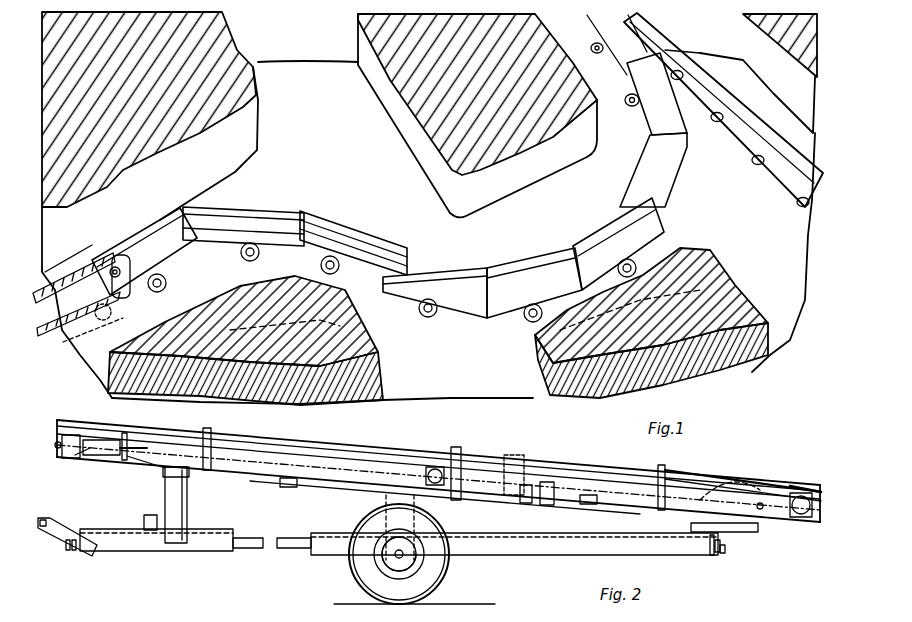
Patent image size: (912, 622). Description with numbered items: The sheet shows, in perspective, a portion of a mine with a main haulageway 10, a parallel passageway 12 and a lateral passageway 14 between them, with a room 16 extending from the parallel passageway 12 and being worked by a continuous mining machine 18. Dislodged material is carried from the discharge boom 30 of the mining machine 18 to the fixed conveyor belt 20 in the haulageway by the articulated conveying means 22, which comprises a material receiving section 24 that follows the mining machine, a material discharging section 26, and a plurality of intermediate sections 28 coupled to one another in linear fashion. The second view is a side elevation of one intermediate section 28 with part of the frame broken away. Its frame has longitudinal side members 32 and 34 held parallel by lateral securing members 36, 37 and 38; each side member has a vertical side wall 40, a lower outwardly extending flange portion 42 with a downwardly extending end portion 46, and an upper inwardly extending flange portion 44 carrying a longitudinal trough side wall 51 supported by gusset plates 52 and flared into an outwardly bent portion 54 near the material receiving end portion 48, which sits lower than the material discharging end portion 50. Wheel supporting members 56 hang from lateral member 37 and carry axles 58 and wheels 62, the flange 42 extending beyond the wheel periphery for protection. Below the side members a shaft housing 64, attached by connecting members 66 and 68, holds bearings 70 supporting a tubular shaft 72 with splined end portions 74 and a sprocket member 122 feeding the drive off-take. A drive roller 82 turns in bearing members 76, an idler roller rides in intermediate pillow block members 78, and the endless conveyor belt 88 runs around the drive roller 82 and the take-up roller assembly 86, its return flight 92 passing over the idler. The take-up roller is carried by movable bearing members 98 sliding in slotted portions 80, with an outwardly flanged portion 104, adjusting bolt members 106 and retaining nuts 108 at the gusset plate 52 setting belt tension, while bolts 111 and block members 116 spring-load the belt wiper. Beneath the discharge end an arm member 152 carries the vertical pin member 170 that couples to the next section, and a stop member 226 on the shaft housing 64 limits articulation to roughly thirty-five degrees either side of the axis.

In FIG. 1, the main haulageway 10 is at (718, 53).
In FIG. 1, the parallel passageway 12 is at (305, 62).
In FIG. 1, the lateral passageway 14 is at (553, 216).
In FIG. 1, the room 16 is at (180, 184).
In FIG. 1, the continuous mining machine 18 is at (80, 260).
In FIG. 1, the fixed conveyor belt 20 is at (790, 172).
In FIG. 1, the articulated conveying means 22 is at (446, 187).
In FIG. 1, the material receiving section 24 is at (170, 258).
In FIG. 1, the material discharging section 26 is at (616, 52).
In FIG. 1, the intermediate sections 28 is at (268, 215).
In FIG. 2, the intermediate sections 28 is at (392, 440).
In FIG. 1, the discharge boom 30 is at (124, 298).
In FIG. 2, the longitudinal side member 32 is at (550, 449).
In FIG. 2, the longitudinal side member 34 is at (275, 428).
In FIG. 2, the lateral securing member 36 is at (808, 480).
In FIG. 2, the lateral securing member 37 is at (400, 480).
In FIG. 2, the lateral securing member 38 is at (189, 495).
In FIG. 2, the vertical side wall 40 is at (290, 470).
In FIG. 2, the lower outwardly extending flange portion 42 is at (510, 495).
In FIG. 2, the upper inwardly extending flange portion 44 is at (736, 480).
In FIG. 2, the downwardly extending end portion 46 is at (524, 503).
In FIG. 2, the material receiving end portion 48 is at (808, 455).
In FIG. 2, the material discharging end portion 50 is at (60, 418).
In FIG. 2, the longitudinal trough side wall 51 is at (518, 460).
In FIG. 2, the gusset plates 52 is at (205, 430).
In FIG. 2, the outwardly bent portion 54 is at (720, 470).
In FIG. 2, the wheel supporting members 56 is at (388, 515).
In FIG. 2, the axle 58 is at (395, 556).
In FIG. 2, the wheel 62 is at (445, 570).
In FIG. 2, the shaft housing 64 is at (200, 553).
In FIG. 2, the connecting member 66 is at (188, 512).
In FIG. 2, the connecting member 68 is at (690, 526).
In FIG. 2, the bearings 70 is at (74, 552).
In FIG. 2, the tubular shaft 72 is at (258, 550).
In FIG. 2, the splined end portions 74 is at (66, 550).
In FIG. 2, the bearing members 76 is at (803, 518).
In FIG. 2, the intermediate pillow block members 78 is at (437, 486).
In FIG. 2, the slotted portions 80 is at (100, 440).
In FIG. 2, the drive roller 82 is at (788, 500).
In FIG. 2, the take-up roller assembly 86 is at (70, 460).
In FIG. 2, the endless conveyor belt 88 is at (300, 488).
In FIG. 2, the return flight 92 is at (550, 505).
In FIG. 2, the movable bearing members 98 is at (80, 460).
In FIG. 2, the outwardly flanged portion 104 is at (118, 458).
In FIG. 2, the adjusting bolt members 106 is at (147, 462).
In FIG. 2, the retaining nuts 108 is at (144, 522).
In FIG. 2, the bolts 111 is at (67, 466).
In FIG. 2, the block members 116 is at (55, 442).
In FIG. 2, the sprocket member 122 is at (724, 553).
In FIG. 2, the arm member 152 is at (42, 528).
In FIG. 2, the pin member 170 is at (45, 518).
In FIG. 2, the stop member 226 is at (147, 532).